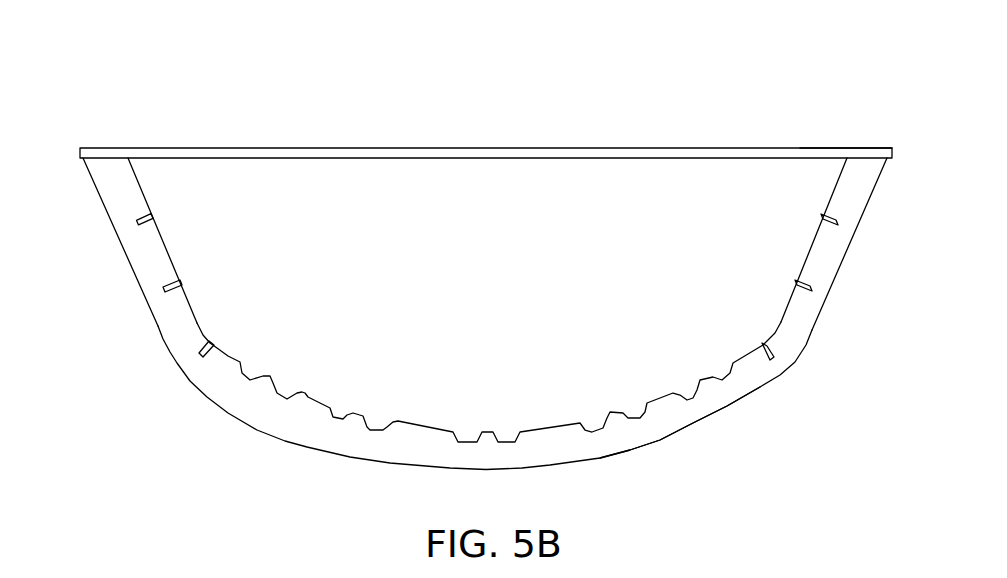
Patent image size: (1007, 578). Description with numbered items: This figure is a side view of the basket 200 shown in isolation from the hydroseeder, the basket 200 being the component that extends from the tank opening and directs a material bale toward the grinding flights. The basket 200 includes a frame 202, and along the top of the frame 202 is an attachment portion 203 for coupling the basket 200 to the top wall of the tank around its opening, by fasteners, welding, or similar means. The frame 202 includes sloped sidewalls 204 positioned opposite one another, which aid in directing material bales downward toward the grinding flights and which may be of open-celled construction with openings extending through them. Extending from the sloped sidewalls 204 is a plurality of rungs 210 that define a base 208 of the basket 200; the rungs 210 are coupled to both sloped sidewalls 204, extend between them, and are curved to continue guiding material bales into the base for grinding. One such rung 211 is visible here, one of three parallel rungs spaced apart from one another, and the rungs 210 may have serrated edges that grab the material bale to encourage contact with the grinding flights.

The basket 200 is at (706, 57).
The frame 202 is at (78, 155).
The attachment portion 203 is at (855, 148).
The sloped sidewalls 204 is at (130, 263).
The base 208 is at (485, 447).
The plurality of rungs 210 is at (486, 420).
The rung 211 is at (628, 453).